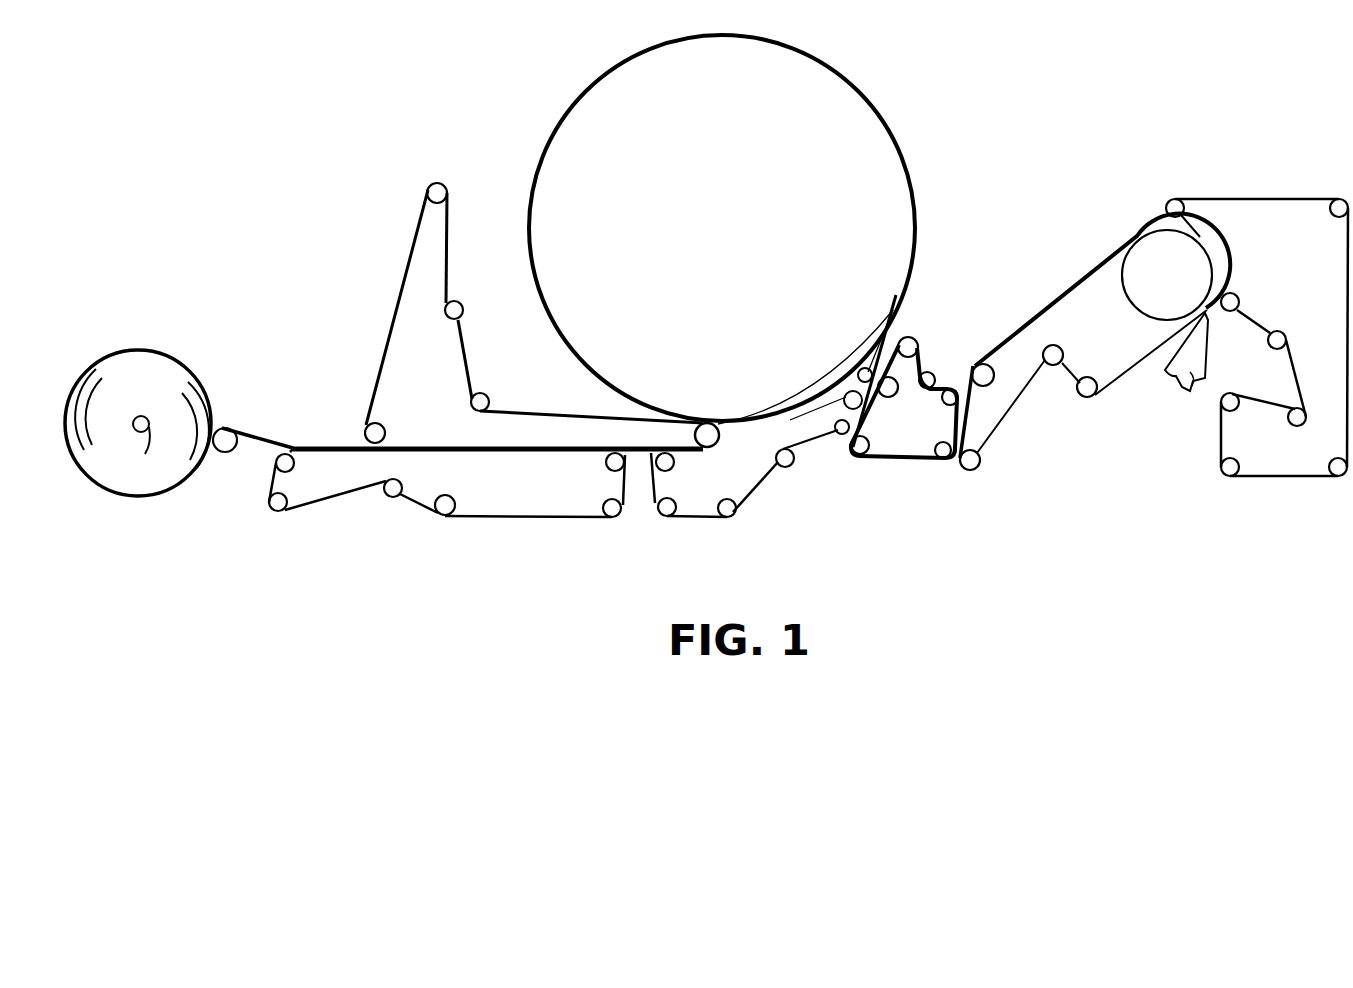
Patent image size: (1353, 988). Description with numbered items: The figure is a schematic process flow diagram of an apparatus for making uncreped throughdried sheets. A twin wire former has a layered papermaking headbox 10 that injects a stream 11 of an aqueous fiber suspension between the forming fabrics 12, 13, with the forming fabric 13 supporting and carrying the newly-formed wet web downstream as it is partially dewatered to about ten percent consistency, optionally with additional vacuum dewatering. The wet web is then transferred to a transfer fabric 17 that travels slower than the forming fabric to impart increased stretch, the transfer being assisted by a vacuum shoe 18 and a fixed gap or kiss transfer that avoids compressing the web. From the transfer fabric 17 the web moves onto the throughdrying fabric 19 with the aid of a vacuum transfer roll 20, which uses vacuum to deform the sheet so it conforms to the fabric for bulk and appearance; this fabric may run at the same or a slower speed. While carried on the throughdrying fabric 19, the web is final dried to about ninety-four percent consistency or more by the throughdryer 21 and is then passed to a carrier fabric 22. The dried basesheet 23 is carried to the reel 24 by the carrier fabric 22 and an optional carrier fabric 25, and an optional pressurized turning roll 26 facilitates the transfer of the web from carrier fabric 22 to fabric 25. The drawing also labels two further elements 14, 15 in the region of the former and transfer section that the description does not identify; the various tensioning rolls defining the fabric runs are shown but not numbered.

The layered papermaking headbox 10 is at (1198, 384).
The stream 11 is at (1212, 312).
The forming fabric 12 is at (1257, 197).
The forming fabric 13 is at (1113, 380).
The fuser roller 14 is at (1184, 289).
The fuser belt 15 is at (1137, 237).
The transfer fabric 17 is at (942, 383).
The vacuum shoe 18 is at (936, 426).
The throughdrying fabric 19 is at (808, 448).
The vacuum transfer roll 20 is at (803, 417).
The throughdryer 21 is at (738, 238).
The carrier fabric 22 is at (390, 308).
The dried basesheet 23 is at (641, 455).
The reel 24 is at (158, 484).
The carrier fabric 25 is at (330, 502).
The pressurized turning roll 26 is at (366, 416).